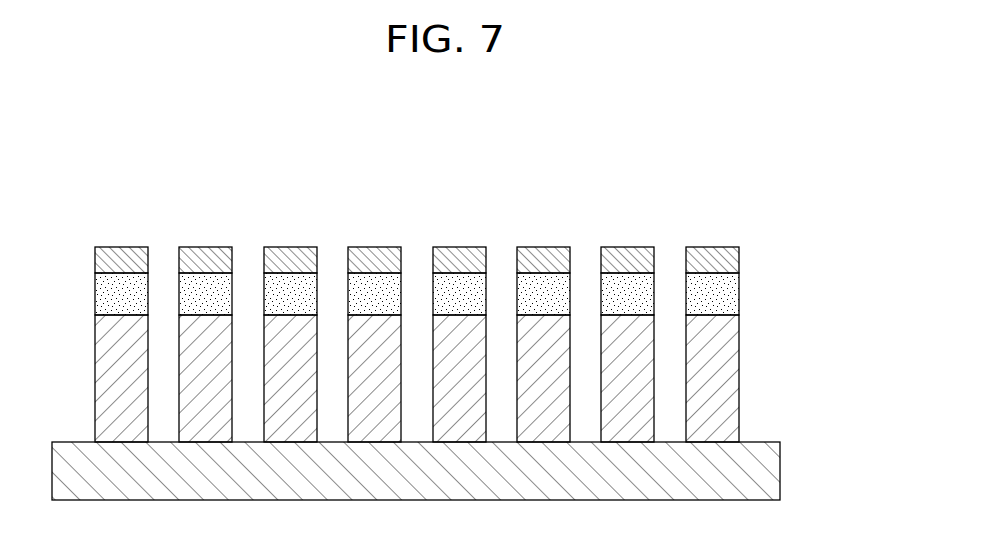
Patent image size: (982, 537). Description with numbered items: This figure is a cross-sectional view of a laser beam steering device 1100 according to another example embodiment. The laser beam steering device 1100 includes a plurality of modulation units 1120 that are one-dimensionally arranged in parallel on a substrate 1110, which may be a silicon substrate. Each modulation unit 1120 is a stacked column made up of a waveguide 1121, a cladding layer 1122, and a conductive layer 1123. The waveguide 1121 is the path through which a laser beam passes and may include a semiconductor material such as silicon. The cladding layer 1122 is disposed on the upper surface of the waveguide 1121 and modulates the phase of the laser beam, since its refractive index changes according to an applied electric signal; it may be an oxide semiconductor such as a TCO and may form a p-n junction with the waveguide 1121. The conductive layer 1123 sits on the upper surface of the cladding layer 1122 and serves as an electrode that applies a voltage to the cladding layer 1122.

The laser beam steering device 1100 is at (778, 195).
The substrate 1110 is at (778, 471).
The modulation unit 1120 is at (122, 232).
The waveguide 1121 is at (740, 375).
The cladding layer 1122 is at (738, 292).
The conductive layer 1123 is at (740, 259).